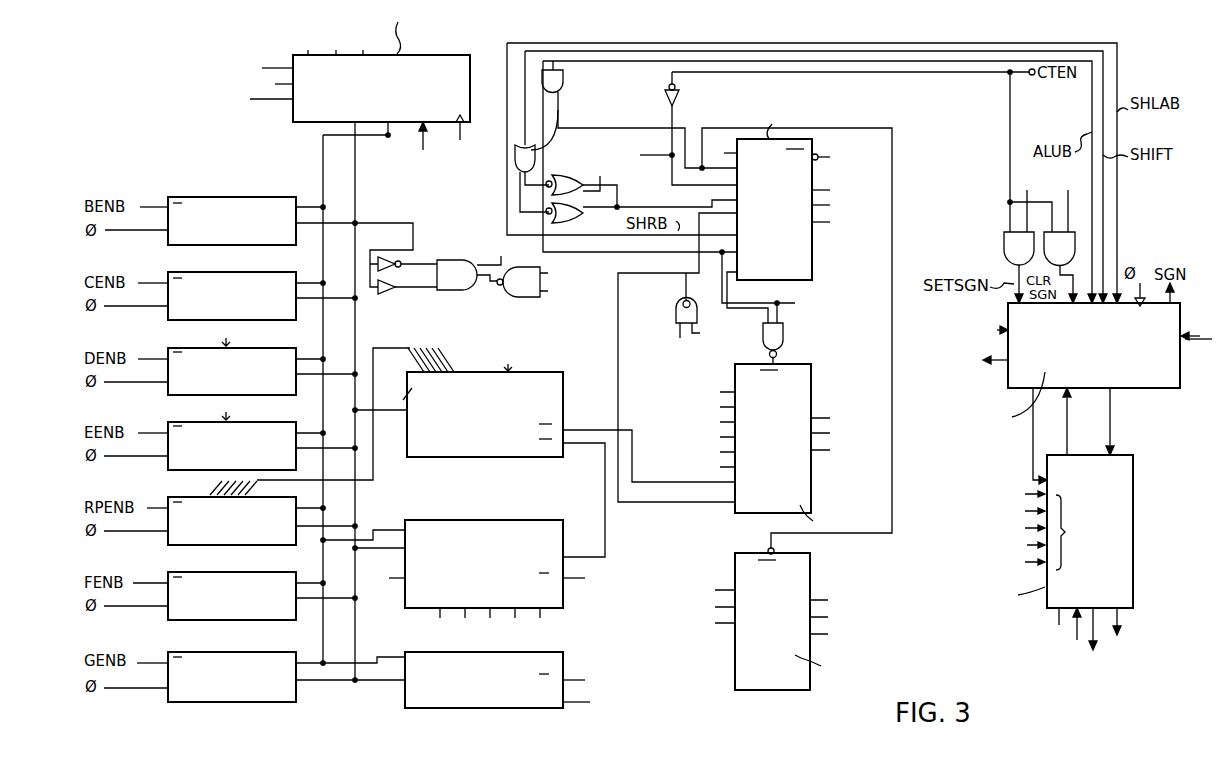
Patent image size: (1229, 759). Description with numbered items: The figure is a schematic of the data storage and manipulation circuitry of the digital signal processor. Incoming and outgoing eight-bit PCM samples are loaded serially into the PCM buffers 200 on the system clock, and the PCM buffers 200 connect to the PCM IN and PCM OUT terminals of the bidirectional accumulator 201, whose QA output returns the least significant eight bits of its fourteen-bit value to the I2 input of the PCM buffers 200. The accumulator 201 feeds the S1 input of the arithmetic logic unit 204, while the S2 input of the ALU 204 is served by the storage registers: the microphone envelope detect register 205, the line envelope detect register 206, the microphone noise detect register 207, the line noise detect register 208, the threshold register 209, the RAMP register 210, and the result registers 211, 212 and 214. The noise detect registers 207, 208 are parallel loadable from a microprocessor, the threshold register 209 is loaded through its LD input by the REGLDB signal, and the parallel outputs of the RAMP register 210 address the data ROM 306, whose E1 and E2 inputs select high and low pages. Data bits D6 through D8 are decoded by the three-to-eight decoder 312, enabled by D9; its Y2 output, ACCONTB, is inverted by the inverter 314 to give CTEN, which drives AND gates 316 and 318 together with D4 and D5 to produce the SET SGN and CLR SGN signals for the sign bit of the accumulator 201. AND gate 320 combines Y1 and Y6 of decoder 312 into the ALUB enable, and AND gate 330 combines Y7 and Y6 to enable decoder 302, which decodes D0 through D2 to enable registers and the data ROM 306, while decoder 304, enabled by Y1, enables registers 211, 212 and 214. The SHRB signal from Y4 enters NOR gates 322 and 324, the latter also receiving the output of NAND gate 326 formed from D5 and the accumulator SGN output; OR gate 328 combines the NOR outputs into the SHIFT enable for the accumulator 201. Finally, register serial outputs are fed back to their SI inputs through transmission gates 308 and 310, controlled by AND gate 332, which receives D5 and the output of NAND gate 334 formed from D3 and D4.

The arithmetic logic unit 204 is at (456, 55).
The microphone envelope detect register 205 is at (295, 198).
The line envelope detect register 206 is at (299, 273).
The microphone noise detect register 207 is at (299, 349).
The line noise detect register 208 is at (299, 423).
The threshold register 209 is at (563, 608).
The RAMP register 210 is at (168, 497).
The storage register 211 is at (271, 574).
The storage register 212 is at (273, 653).
The storage register 214 is at (563, 657).
The PCM buffers 200 is at (1133, 532).
The bidirectional accumulator 201 is at (1180, 385).
The three-to-eight decoder 302 is at (811, 403).
The three-to-eight decoder 304 is at (811, 588).
The data ROM 306 is at (542, 457).
The transmission gate 308 is at (398, 256).
The transmission gate 310 is at (386, 294).
The three-to-eight decoder 312 is at (812, 256).
The inverter 314 is at (679, 98).
The AND gate 316 is at (1004, 252).
The AND gate 318 is at (1080, 248).
The AND gate 320 is at (565, 88).
The NOR gate 322 is at (617, 207).
The NOR gate 324 is at (549, 218).
The NAND gate 326 is at (677, 310).
The OR gate 328 is at (564, 120).
The AND gate 330 is at (783, 338).
The AND gate 332 is at (482, 256).
The NAND gate 334 is at (525, 300).